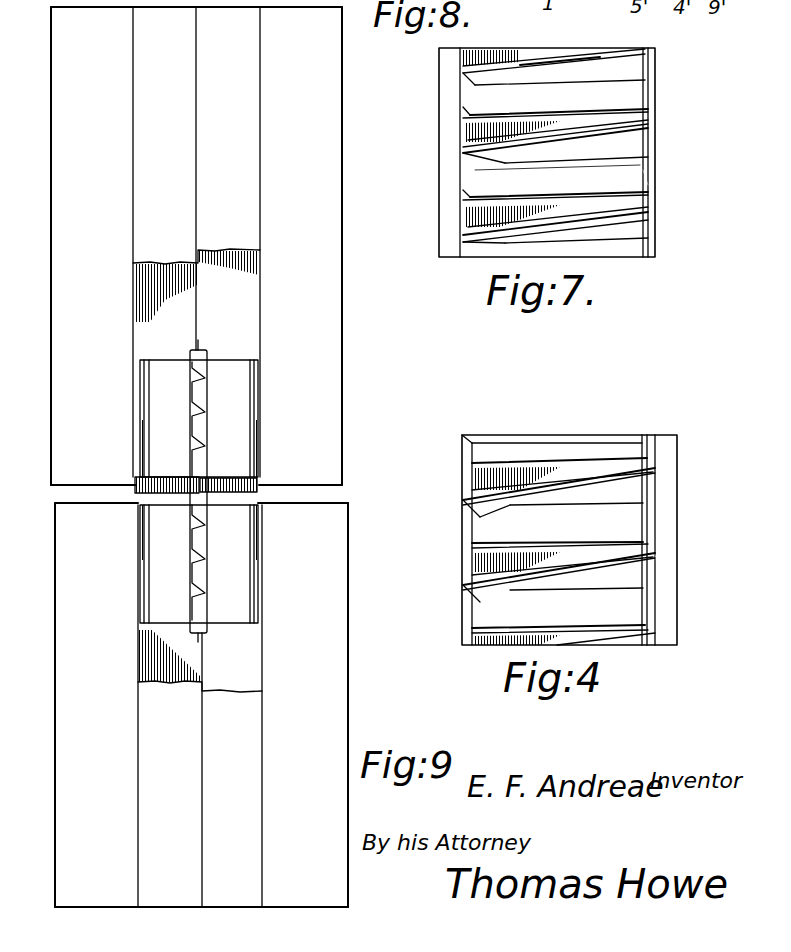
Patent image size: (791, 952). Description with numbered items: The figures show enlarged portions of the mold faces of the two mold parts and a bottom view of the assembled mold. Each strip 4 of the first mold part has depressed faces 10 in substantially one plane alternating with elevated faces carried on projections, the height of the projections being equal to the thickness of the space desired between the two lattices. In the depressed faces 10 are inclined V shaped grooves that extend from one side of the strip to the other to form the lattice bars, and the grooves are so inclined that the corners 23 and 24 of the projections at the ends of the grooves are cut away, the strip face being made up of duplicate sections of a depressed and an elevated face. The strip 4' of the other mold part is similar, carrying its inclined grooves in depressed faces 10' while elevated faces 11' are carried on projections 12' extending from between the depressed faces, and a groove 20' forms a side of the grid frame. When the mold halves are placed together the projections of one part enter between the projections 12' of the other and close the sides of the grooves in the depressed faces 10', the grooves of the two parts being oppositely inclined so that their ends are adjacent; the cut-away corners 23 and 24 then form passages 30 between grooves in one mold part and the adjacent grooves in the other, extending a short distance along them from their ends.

In FIG. 9, the strip 4 is at (196, 293).
In FIG. 7, the strip 4 is at (534, 152).
In FIG. 4, the strip 4 is at (569, 521).
In FIG. 9, the strip 4' is at (201, 705).
In FIG. 9, the passage 30 is at (208, 438).
In FIG. 4, the face 10 is at (540, 472).
In FIG. 7, the depressed face 10' is at (528, 145).
In FIG. 7, the elevated face 11' is at (526, 82).
In FIG. 7, the projection 12' is at (585, 174).
In FIG. 7, the groove 20' is at (523, 124).
In FIG. 4, the corner 23 is at (627, 450).
In FIG. 4, the corner 24 is at (482, 508).